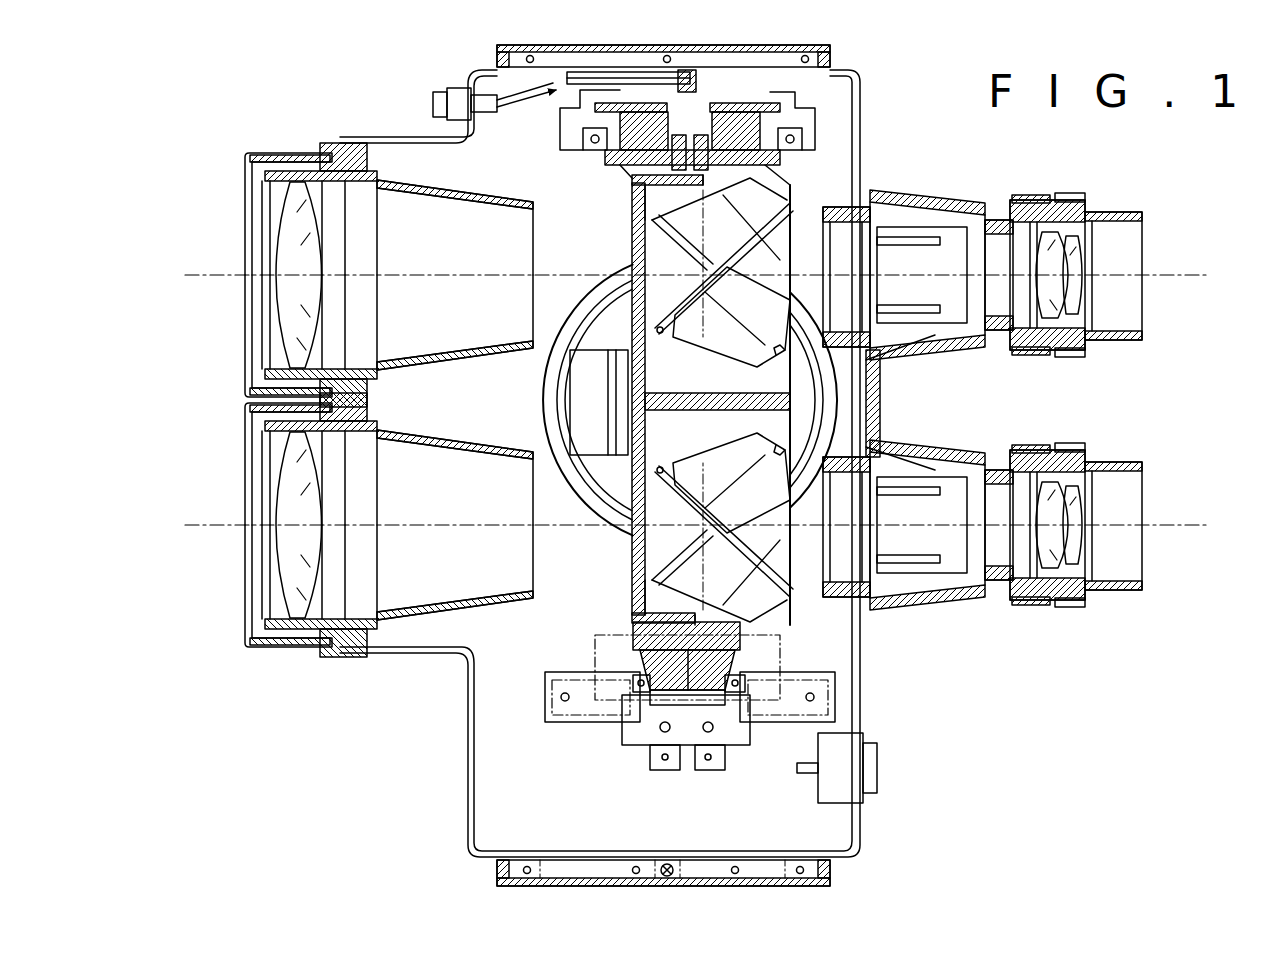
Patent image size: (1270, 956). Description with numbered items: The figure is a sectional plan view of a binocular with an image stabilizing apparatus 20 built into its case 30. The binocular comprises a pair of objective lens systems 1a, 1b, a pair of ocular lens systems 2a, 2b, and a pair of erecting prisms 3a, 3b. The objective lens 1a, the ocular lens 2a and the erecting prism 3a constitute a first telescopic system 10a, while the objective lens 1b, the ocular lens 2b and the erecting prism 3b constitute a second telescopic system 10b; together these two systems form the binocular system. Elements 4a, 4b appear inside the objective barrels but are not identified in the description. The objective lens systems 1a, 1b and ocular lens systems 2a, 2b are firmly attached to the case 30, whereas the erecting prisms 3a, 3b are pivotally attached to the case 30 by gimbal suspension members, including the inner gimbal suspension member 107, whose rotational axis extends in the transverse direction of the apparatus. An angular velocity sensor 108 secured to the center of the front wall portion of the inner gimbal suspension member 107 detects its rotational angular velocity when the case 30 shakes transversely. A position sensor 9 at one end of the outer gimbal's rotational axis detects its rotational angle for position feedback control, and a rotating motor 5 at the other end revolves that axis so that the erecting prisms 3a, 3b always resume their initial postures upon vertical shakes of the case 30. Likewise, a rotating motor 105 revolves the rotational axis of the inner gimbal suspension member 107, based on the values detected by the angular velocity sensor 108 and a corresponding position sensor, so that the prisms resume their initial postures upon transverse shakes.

The objective lens system 1a is at (292, 136).
The objective lens system 1b is at (290, 654).
The ocular lens system 2a is at (1069, 203).
The ocular lens system 2b is at (1072, 602).
The erecting prism 3a is at (657, 247).
The erecting prism 3b is at (660, 545).
The objective lens (upper) 4a is at (222, 255).
The objective lens (lower) 4b is at (212, 532).
The rotating motor (torque motor) 5 is at (712, 103).
The position sensor 9 is at (655, 715).
The first telescopic system 10a is at (1179, 252).
The second telescopic system 10b is at (1160, 549).
The image stabilizing apparatus 20 is at (832, 100).
The case 30 is at (862, 842).
The rotating motor (torque motor) 105 is at (590, 482).
The inner gimbal suspension member 107 is at (633, 603).
The angular velocity sensor 108 is at (585, 388).